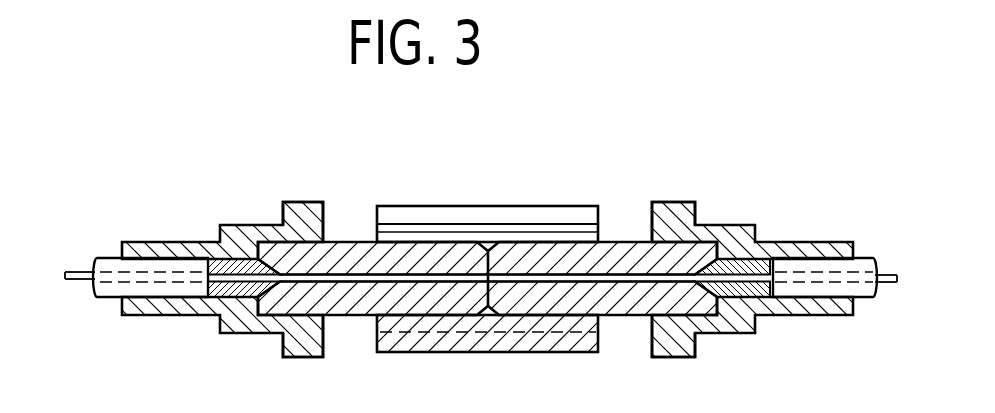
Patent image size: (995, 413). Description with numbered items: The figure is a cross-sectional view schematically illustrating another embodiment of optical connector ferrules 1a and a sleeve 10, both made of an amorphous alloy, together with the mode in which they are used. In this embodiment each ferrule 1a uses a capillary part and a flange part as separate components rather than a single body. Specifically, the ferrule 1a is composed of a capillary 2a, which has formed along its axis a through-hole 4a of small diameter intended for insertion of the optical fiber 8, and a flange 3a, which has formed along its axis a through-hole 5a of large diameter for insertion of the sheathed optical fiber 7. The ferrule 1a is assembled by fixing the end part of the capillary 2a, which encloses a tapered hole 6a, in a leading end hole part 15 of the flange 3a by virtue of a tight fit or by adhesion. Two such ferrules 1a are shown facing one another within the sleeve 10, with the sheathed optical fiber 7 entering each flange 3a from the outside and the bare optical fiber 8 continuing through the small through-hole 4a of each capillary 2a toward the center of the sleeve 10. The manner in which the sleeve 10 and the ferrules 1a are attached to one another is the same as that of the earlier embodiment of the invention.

The optical connector ferrule 1a is at (243, 211).
The capillary 2a is at (355, 240).
The flange 3a is at (130, 240).
The through-hole 4a is at (536, 282).
The through-hole 5a is at (818, 299).
The tapered hole 6a is at (711, 297).
The sheathed optical fiber 7 is at (107, 298).
The optical fiber 8 is at (360, 283).
The sleeve 10 is at (473, 200).
The leading end hole part 15 is at (659, 314).